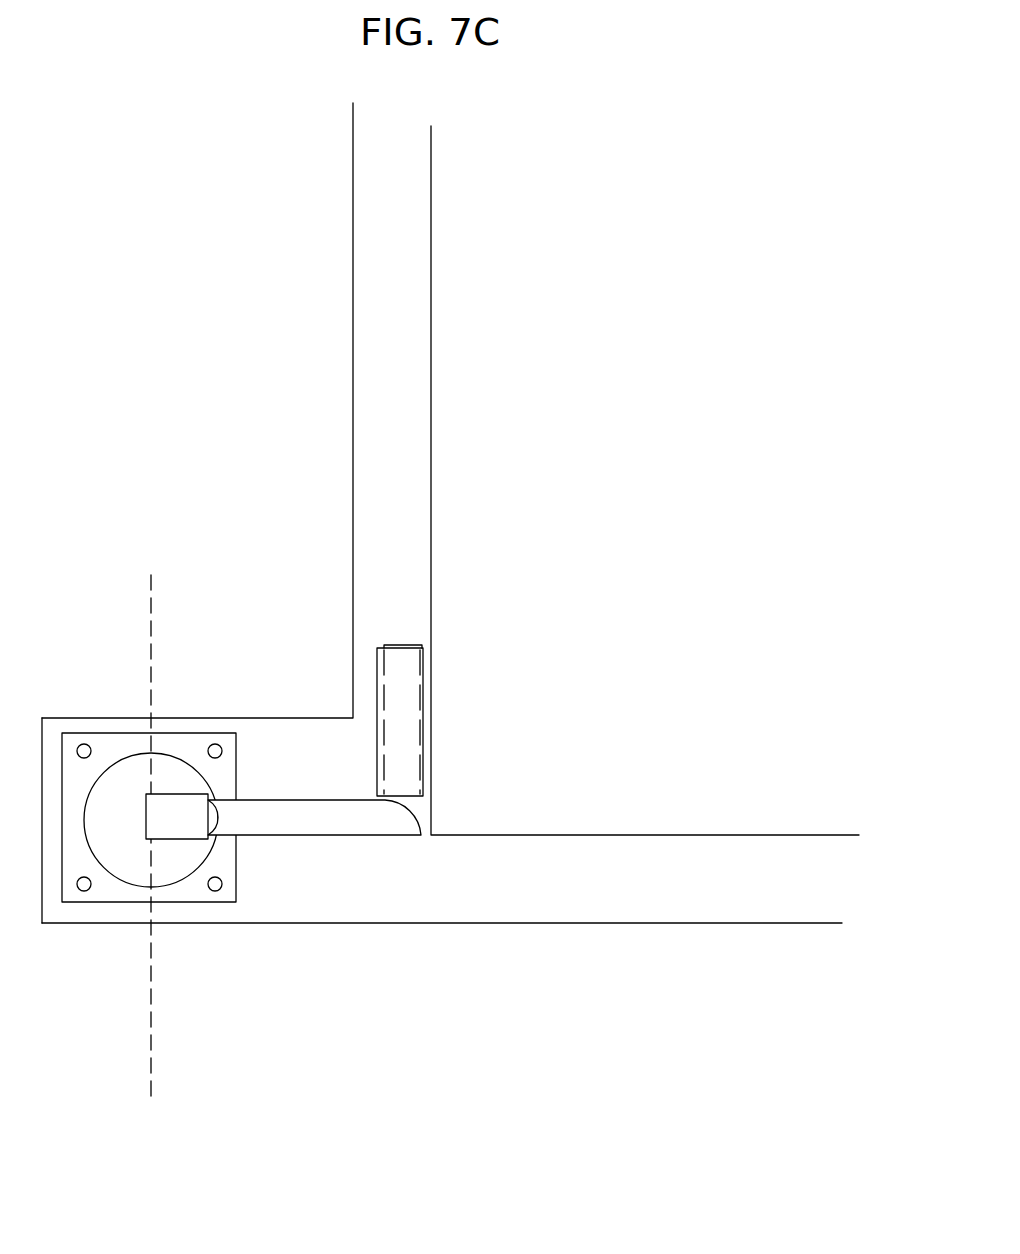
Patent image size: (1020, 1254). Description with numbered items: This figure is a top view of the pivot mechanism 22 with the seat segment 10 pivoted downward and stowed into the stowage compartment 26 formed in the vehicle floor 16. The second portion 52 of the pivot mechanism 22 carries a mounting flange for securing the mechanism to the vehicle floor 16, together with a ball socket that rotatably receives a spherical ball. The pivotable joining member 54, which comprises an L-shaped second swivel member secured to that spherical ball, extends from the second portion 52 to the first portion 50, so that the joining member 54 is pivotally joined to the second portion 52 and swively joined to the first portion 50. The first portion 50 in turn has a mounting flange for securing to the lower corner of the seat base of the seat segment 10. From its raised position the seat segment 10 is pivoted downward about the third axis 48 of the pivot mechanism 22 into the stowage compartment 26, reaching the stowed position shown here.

The seat segment 10 is at (643, 477).
The vehicle floor 16 is at (233, 547).
The pivot mechanism 22 is at (81, 943).
The stowage compartment 26 is at (407, 231).
The third axis 48 is at (152, 1052).
The first portion 50 is at (402, 693).
The second portion 52 is at (133, 768).
The pivotable joining member 54 is at (328, 820).